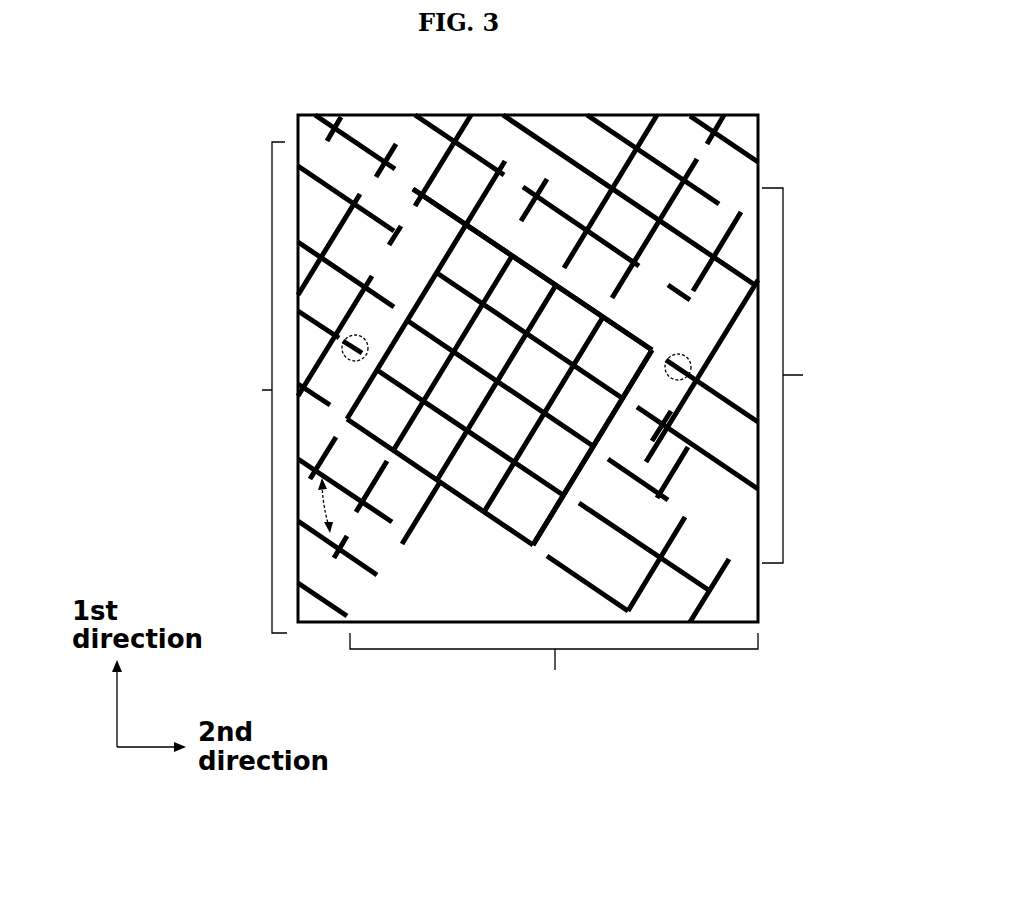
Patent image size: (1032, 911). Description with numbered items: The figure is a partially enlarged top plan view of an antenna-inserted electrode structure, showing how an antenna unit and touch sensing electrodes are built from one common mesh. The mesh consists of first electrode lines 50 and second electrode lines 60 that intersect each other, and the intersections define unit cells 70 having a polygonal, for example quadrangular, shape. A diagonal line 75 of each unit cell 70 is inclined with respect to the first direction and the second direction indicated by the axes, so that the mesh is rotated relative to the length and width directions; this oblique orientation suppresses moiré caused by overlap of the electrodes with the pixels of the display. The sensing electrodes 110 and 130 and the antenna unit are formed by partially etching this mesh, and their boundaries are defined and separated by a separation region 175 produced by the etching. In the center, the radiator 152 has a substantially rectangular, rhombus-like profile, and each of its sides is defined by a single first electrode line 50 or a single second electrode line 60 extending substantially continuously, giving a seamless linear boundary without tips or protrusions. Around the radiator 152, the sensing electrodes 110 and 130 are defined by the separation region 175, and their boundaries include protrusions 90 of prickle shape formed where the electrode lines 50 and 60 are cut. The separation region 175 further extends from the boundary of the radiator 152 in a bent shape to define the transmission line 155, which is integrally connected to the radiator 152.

The first electrode lines 50 is at (350, 232).
The second electrode lines 60 is at (350, 284).
The unit cell 70 is at (449, 447).
The diagonal line 75 is at (322, 507).
The protrusion 90 is at (342, 352).
The sensing electrode 110 is at (538, 387).
The sensing electrode 130 is at (554, 671).
The radiator 152 is at (582, 472).
The transmission line 155 is at (477, 150).
The separation region 175 is at (598, 297).